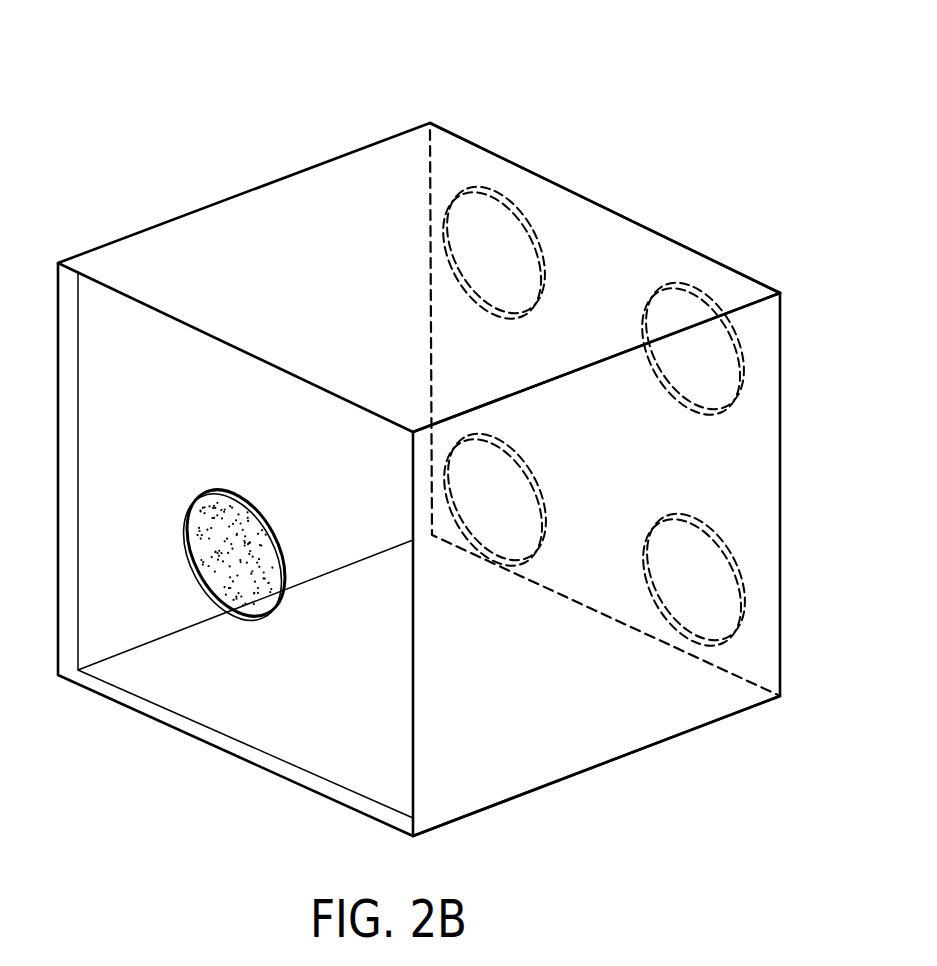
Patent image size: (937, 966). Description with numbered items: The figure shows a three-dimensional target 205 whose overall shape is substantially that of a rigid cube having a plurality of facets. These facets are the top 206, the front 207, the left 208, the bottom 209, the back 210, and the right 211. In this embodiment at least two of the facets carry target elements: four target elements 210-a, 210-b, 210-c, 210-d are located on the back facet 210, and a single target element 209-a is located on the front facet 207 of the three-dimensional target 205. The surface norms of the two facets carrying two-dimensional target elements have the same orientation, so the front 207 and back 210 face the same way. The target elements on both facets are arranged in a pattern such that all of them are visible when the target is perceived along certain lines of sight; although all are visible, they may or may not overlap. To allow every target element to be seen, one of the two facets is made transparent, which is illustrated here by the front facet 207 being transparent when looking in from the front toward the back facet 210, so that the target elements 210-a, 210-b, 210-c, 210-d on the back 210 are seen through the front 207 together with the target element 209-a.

The three-dimensional target 205 is at (442, 97).
The top facet 206 is at (363, 158).
The front facet 207 is at (157, 227).
The left facet 208 is at (90, 583).
The bottom facet 209 is at (270, 772).
The target element 209-a is at (192, 512).
The back facet 210 is at (618, 213).
The target element 210-a is at (450, 232).
The target element 210-b is at (747, 352).
The target element 210-c is at (495, 562).
The target element 210-d is at (740, 562).
The right facet 211 is at (747, 448).